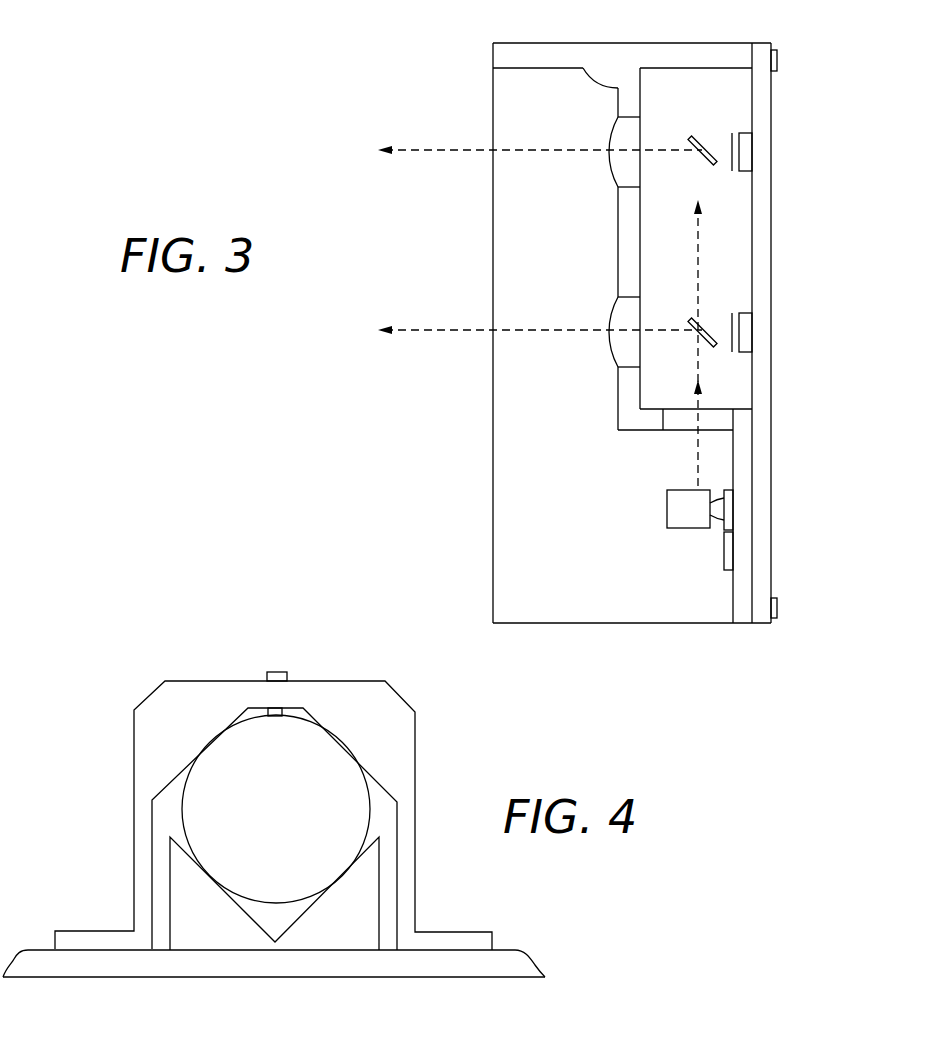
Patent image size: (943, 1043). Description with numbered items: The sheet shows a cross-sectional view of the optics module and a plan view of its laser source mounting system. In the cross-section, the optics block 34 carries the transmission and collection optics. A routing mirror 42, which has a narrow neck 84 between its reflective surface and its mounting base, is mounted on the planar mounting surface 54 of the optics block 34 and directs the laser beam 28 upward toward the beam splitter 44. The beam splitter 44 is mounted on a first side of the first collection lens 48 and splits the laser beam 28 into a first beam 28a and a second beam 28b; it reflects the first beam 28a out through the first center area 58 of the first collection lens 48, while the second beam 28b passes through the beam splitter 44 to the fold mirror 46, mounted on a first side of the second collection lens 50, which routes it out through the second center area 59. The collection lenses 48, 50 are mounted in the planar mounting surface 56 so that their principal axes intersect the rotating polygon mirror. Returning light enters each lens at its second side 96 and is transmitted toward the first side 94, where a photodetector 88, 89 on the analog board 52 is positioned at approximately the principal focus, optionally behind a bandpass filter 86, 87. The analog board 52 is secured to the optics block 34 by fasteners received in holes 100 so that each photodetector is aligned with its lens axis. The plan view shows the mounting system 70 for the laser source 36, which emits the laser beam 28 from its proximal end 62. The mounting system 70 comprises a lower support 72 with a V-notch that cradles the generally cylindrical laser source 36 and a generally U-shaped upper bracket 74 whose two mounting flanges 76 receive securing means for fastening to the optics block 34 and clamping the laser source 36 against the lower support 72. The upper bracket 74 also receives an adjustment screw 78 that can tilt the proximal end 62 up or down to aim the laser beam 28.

In FIG. 3, the laser beam 28 is at (698, 456).
In FIG. 3, the first beam 28a is at (428, 328).
In FIG. 3, the second beam 28b is at (428, 148).
In FIG. 3, the optics block 34 is at (676, 48).
In FIG. 4, the laser source 36 is at (240, 765).
In FIG. 3, the routing mirror 42 is at (673, 523).
In FIG. 3, the beam splitter 44 is at (706, 318).
In FIG. 3, the fold mirror 46 is at (700, 132).
In FIG. 3, the first collection lens 48 is at (623, 347).
In FIG. 3, the second collection lens 50 is at (608, 168).
In FIG. 3, the analog board 52 is at (757, 223).
In FIG. 3, the planar mounting surface 54 is at (733, 600).
In FIG. 3, the planar mounting surface 56 is at (583, 68).
In FIG. 3, the first center area 58 is at (605, 333).
In FIG. 3, the second center area 59 is at (604, 156).
In FIG. 4, the proximal end 62 is at (182, 818).
In FIG. 4, the mounting system 70 is at (114, 634).
In FIG. 4, the lower support 72 is at (322, 945).
In FIG. 4, the upper bracket 74 is at (155, 760).
In FIG. 4, the mounting flanges 76 is at (85, 930).
In FIG. 4, the adjustment screw 78 is at (280, 672).
In FIG. 3, the narrow neck 84 is at (713, 502).
In FIG. 3, the bandpass filter 86 is at (720, 345).
In FIG. 3, the bandpass filter 87 is at (723, 138).
In FIG. 3, the photodetector 88 is at (745, 335).
In FIG. 3, the photodetector 89 is at (745, 152).
In FIG. 3, the first side 94 is at (641, 308).
In FIG. 3, the second side 96 is at (611, 129).
In FIG. 3, the holes 100 is at (777, 60).